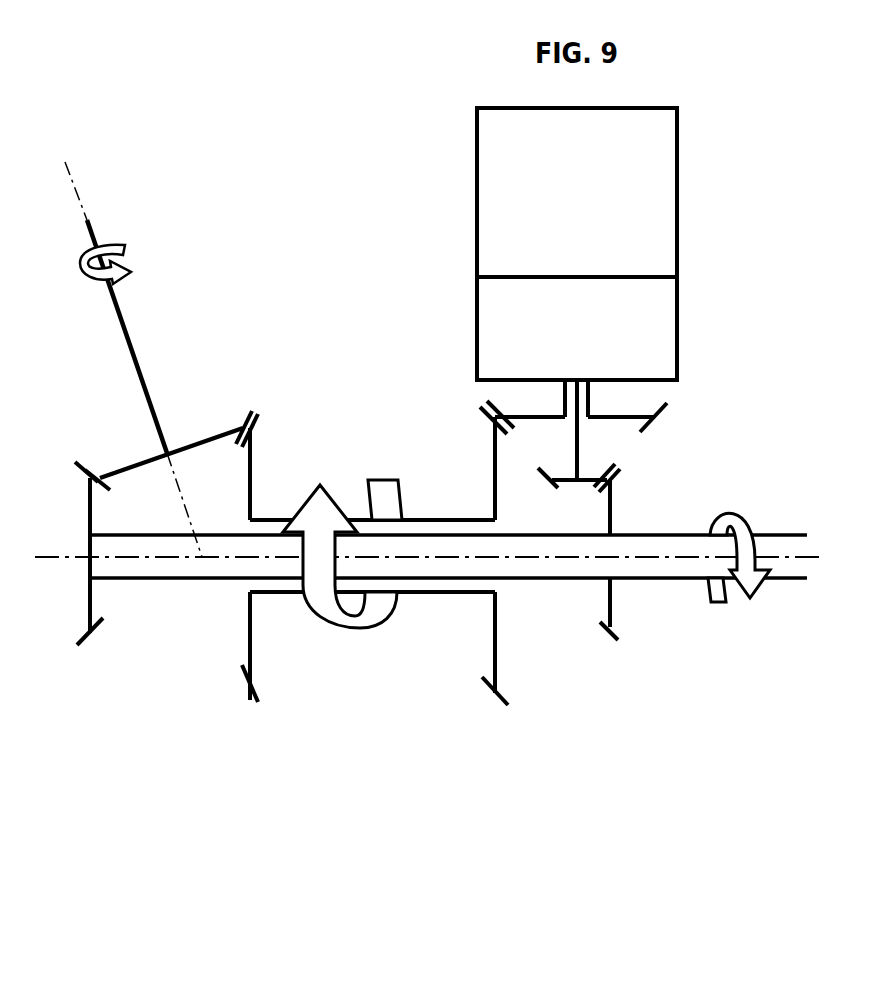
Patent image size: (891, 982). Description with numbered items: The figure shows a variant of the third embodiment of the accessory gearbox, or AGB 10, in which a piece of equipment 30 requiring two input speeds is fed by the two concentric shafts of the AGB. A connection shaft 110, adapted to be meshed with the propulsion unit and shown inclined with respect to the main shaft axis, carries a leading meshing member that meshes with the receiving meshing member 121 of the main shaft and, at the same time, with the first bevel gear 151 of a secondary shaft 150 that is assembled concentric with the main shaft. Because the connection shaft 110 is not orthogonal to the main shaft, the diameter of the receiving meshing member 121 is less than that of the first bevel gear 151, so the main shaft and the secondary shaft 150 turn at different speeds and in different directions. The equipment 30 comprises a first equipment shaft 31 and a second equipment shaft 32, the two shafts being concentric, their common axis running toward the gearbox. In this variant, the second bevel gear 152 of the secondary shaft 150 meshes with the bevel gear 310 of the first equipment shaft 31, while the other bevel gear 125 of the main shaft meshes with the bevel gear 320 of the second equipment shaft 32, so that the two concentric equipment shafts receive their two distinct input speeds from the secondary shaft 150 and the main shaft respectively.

The AGB 10 is at (817, 358).
The equipment 30 is at (678, 212).
The first equipment shaft 31 is at (590, 398).
The second equipment shaft 32 is at (575, 437).
The connection shaft 110 is at (133, 357).
The receiving meshing member 121 is at (78, 645).
The bevel gear 125 is at (612, 640).
The secondary shaft 150 is at (422, 595).
The first bevel gear 151 is at (252, 695).
The second bevel gear 152 is at (488, 422).
The bevel gear 310 is at (655, 413).
The bevel gear 320 is at (612, 466).